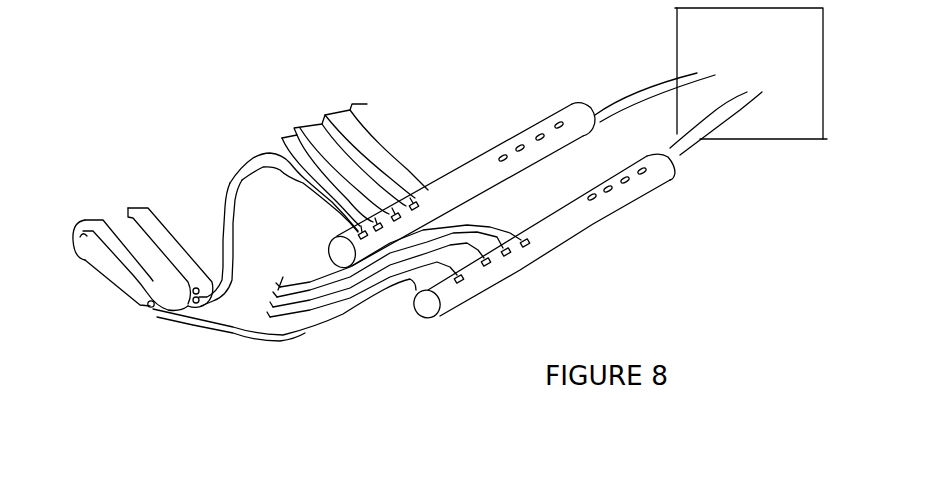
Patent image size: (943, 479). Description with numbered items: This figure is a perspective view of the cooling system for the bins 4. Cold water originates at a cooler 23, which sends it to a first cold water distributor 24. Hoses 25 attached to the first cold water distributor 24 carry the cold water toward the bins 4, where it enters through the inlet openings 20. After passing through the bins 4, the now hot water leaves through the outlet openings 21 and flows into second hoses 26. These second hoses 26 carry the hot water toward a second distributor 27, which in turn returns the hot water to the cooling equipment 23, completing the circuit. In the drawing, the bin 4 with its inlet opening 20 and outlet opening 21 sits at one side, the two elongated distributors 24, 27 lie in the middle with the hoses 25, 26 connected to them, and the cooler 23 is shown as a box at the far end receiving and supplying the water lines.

The bin 4 is at (97, 258).
The inlet opening 20 is at (150, 309).
The outlet opening 21 is at (194, 287).
The cooler 23 is at (793, 42).
The first cold water distributor 24 is at (588, 222).
The hoses 25 is at (342, 314).
The second hoses 26 is at (268, 158).
The second distributor 27 is at (479, 158).